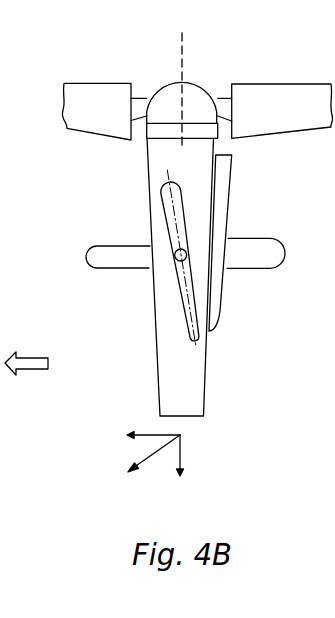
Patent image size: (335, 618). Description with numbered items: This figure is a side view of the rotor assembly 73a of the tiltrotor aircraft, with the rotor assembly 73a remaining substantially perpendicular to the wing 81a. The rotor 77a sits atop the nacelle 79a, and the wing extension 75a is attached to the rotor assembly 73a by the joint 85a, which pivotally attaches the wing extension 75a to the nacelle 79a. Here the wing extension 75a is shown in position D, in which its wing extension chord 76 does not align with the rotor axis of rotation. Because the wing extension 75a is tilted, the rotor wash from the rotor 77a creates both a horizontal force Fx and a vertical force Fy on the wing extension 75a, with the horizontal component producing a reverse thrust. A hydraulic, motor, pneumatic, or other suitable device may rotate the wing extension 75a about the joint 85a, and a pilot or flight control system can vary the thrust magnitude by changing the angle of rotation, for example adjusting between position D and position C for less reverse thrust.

The rotor assembly 73a is at (228, 420).
The wing extension 75a is at (153, 290).
The wing extension chord 76 is at (192, 291).
The rotor 77a is at (98, 135).
The nacelle 79a is at (148, 190).
The wing 81a is at (115, 270).
The joint 85a is at (184, 250).